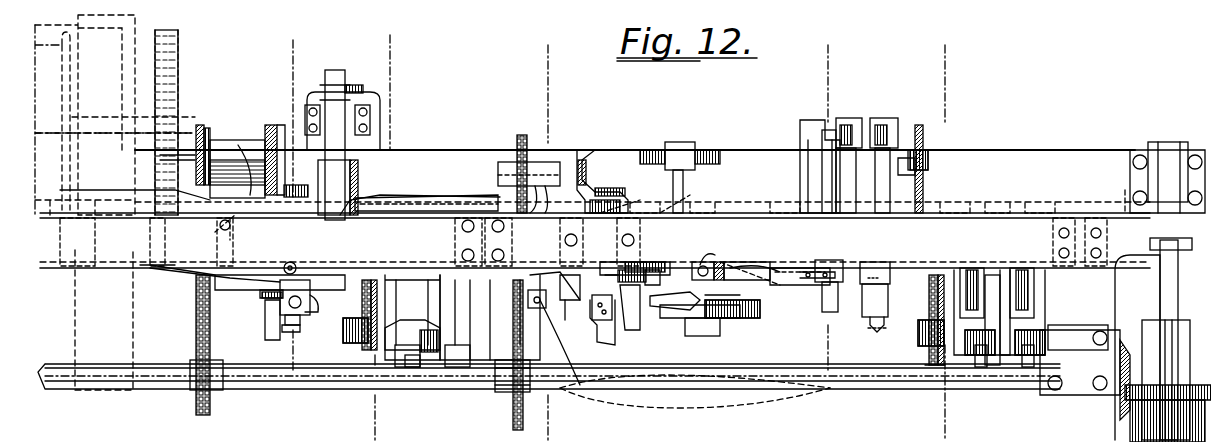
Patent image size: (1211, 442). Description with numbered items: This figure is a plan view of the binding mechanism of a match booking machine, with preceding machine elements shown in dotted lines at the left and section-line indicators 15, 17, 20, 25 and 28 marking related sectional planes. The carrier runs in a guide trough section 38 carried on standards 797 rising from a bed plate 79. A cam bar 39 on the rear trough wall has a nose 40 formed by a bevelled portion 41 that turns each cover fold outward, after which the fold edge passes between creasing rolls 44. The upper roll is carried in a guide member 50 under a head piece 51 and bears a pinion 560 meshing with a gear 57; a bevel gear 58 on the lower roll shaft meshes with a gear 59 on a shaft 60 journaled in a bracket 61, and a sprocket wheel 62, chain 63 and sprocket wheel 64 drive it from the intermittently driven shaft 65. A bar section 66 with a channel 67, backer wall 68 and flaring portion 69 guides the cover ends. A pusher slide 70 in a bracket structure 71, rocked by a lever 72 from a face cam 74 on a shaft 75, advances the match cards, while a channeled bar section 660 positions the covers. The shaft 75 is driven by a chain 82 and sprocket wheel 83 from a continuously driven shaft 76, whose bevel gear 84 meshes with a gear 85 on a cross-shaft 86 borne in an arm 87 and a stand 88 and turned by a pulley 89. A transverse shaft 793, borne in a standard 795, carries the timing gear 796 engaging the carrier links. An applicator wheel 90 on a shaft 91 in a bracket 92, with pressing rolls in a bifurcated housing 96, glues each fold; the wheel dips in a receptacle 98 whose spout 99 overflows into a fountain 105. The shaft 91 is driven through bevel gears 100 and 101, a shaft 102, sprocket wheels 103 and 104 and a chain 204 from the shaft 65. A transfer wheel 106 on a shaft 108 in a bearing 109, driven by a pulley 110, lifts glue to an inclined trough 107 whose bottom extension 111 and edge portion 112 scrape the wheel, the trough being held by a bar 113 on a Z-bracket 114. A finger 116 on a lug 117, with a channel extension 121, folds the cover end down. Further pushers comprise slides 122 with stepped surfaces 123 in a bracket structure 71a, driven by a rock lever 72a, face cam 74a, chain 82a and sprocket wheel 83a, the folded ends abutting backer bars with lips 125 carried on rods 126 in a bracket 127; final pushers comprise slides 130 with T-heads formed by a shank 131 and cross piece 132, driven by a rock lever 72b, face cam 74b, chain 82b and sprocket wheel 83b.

The section line 15 is at (300, 46).
The section line 17 is at (409, 36).
The section line 20 is at (530, 42).
The section line 25 is at (815, 43).
The section line 28 is at (925, 43).
The guide trough section 38 is at (140, 270).
The cam bar 39 is at (236, 280).
The nose portion 40 is at (160, 268).
The bevelled portion 41 is at (180, 270).
The creasing rolls 44 is at (318, 300).
The guide member 50 is at (270, 295).
The head piece 51 is at (285, 288).
The gear 57 is at (282, 320).
The bevel gear 58 is at (335, 180).
The bevel gear 59 is at (280, 125).
The shaft 60 is at (165, 157).
The bracket 61 is at (235, 142).
The sprocket wheel 62 is at (202, 125).
The chain 63 is at (208, 128).
The sprocket wheel 64 is at (210, 408).
The intermittently driven shaft 65 is at (58, 380).
The bar section 66 is at (250, 150).
The longitudinal channel 67 is at (250, 238).
The backer wall 68 is at (265, 220).
The flaring portion 69 is at (175, 190).
The slide 70 is at (445, 296).
The bracket structure 71 is at (450, 312).
The rock lever 72 is at (410, 360).
The face cam 74 is at (448, 365).
The horizontal shaft 75 is at (348, 340).
The continuously driven shaft 76 is at (400, 215).
The bed plate 79 is at (1048, 148).
The chain 82 is at (362, 313).
The sprocket wheel 83 is at (370, 360).
The bevel gear 84 is at (356, 200).
The bevel gear 85 is at (360, 213).
The cross-shaft 86 is at (345, 55).
The arm 87 is at (296, 185).
The companion stand 88 is at (370, 108).
The pulley 89 is at (360, 85).
The applicator wheel 90 is at (650, 262).
The shaft 91 is at (630, 208).
The bracket 92 is at (675, 212).
The bifurcated housing 96 is at (650, 285).
The receptacle 98 is at (690, 315).
The overflow spout 99 is at (530, 305).
The bevel gear 100 is at (615, 190).
The bevel gear 101 is at (582, 155).
The shaft 102 is at (498, 170).
The sprocket wheel 103 is at (522, 135).
The sprocket wheel 104 is at (518, 410).
The glue fountain 105 is at (775, 375).
The transfer wheel 106 is at (760, 320).
The inclined trough 107 is at (608, 300).
The shaft 108 is at (683, 142).
The bearing 109 is at (710, 283).
The pulley 110 is at (712, 150).
The horizontal bottom extension 111 is at (605, 325).
The free lateral edge portion 112 is at (630, 310).
The bar 113 is at (580, 305).
The Z-bracket 114 is at (540, 315).
The finger 116 is at (725, 265).
The lug 117 is at (785, 262).
The extension 121 is at (800, 287).
The slide 122 is at (820, 185).
The stepped surface 123 is at (835, 270).
The forward lip 125 is at (895, 262).
The parallel rods 126 is at (877, 328).
The bracket 127 is at (885, 250).
The slide 130 is at (1025, 318).
The shank 131 is at (972, 268).
The cross piece 132 is at (1025, 268).
The chain 204 is at (510, 395).
The bolt 560 is at (275, 320).
The channeled bar section 660 is at (430, 195).
The bracket structure 71a is at (828, 130).
The rock lever 72a is at (885, 118).
The face cam 74a is at (850, 118).
The chain 82a is at (925, 178).
The sprocket wheel 83a is at (920, 125).
The chain 82b is at (927, 303).
The sprocket wheel 83b is at (930, 360).
The face cam 74b is at (990, 365).
The rock lever 72b is at (1028, 368).
The transverse shaft 793 is at (1168, 142).
The standard 795 is at (1195, 150).
The timing gear 796 is at (1160, 280).
The standards 797 is at (1072, 213).